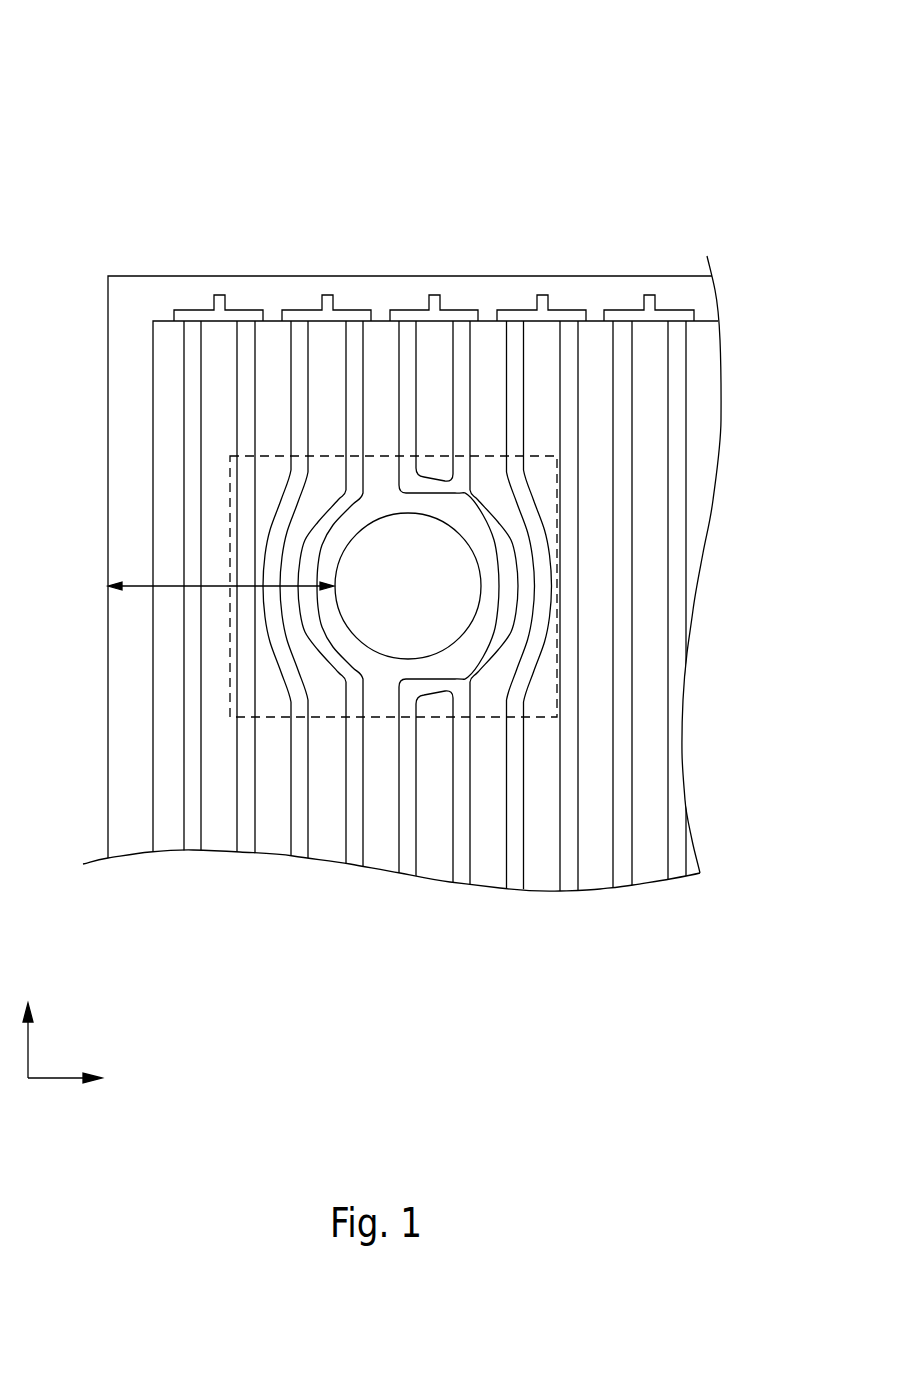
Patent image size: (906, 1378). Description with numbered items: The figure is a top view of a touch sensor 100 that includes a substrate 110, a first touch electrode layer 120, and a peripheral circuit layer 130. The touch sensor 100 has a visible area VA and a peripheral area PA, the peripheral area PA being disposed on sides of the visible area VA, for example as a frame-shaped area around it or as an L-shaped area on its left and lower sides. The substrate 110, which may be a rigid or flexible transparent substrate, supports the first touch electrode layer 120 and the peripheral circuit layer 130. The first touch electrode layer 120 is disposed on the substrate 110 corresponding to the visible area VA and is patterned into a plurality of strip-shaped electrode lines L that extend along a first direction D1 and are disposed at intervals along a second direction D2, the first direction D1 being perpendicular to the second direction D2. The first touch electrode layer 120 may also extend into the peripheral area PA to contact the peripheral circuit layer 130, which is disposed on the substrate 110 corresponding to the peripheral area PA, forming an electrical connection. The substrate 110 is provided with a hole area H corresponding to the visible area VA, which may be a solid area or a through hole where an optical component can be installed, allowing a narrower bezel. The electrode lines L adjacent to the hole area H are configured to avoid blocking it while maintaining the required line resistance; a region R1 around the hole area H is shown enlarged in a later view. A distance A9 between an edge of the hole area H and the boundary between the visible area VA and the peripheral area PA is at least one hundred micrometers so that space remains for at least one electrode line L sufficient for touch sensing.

The touch sensor 100 is at (78, 31).
The substrate 110 is at (108, 328).
The first touch electrode layer 120 is at (706, 390).
The peripheral circuit layer 130 is at (650, 295).
The peripheral area PA is at (140, 288).
The visible area VA is at (162, 452).
The hole area H is at (419, 599).
The region R1 is at (230, 635).
The distance A9 is at (217, 583).
The electrode lines L is at (668, 341).
The first direction D1 is at (29, 1027).
The second direction D2 is at (86, 1080).